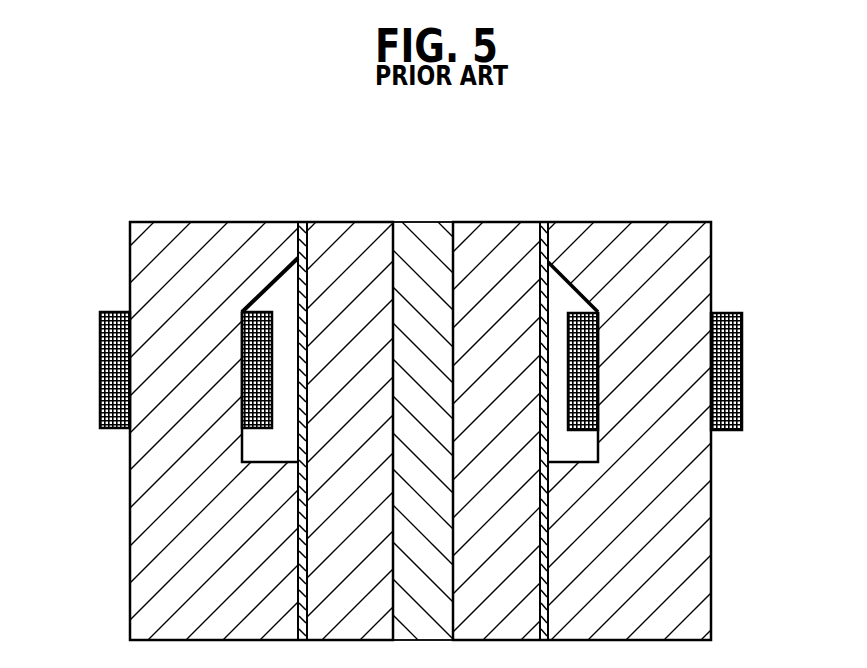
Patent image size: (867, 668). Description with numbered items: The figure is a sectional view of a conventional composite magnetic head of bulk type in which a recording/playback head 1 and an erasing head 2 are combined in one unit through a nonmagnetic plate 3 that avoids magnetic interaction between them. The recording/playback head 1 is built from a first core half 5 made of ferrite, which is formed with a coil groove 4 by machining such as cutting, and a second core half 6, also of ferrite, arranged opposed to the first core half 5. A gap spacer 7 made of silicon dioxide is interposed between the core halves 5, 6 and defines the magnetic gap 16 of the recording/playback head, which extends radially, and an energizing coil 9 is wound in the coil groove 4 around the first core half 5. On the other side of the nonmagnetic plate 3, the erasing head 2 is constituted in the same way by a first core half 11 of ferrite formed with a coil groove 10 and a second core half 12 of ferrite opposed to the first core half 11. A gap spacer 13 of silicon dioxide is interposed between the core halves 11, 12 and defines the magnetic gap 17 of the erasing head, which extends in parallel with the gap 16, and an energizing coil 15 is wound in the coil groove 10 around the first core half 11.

The recording/playback head 1 is at (280, 218).
The erasing head 2 is at (623, 220).
The nonmagnetic plate 3 is at (425, 240).
The coil groove 4 is at (243, 446).
The first core half 5 is at (201, 228).
The second core half 6 is at (366, 240).
The gap spacer 7 is at (305, 232).
The magnetic gap of the recording/playback head 16 is at (320, 396).
The energizing coil 9 is at (100, 372).
The coil groove 10 is at (592, 445).
The first core half 11 is at (678, 243).
The second core half 12 is at (488, 240).
The gap spacer 13 is at (558, 250).
The magnetic gap of the erasing head 17 is at (580, 396).
The energizing coil 15 is at (742, 375).